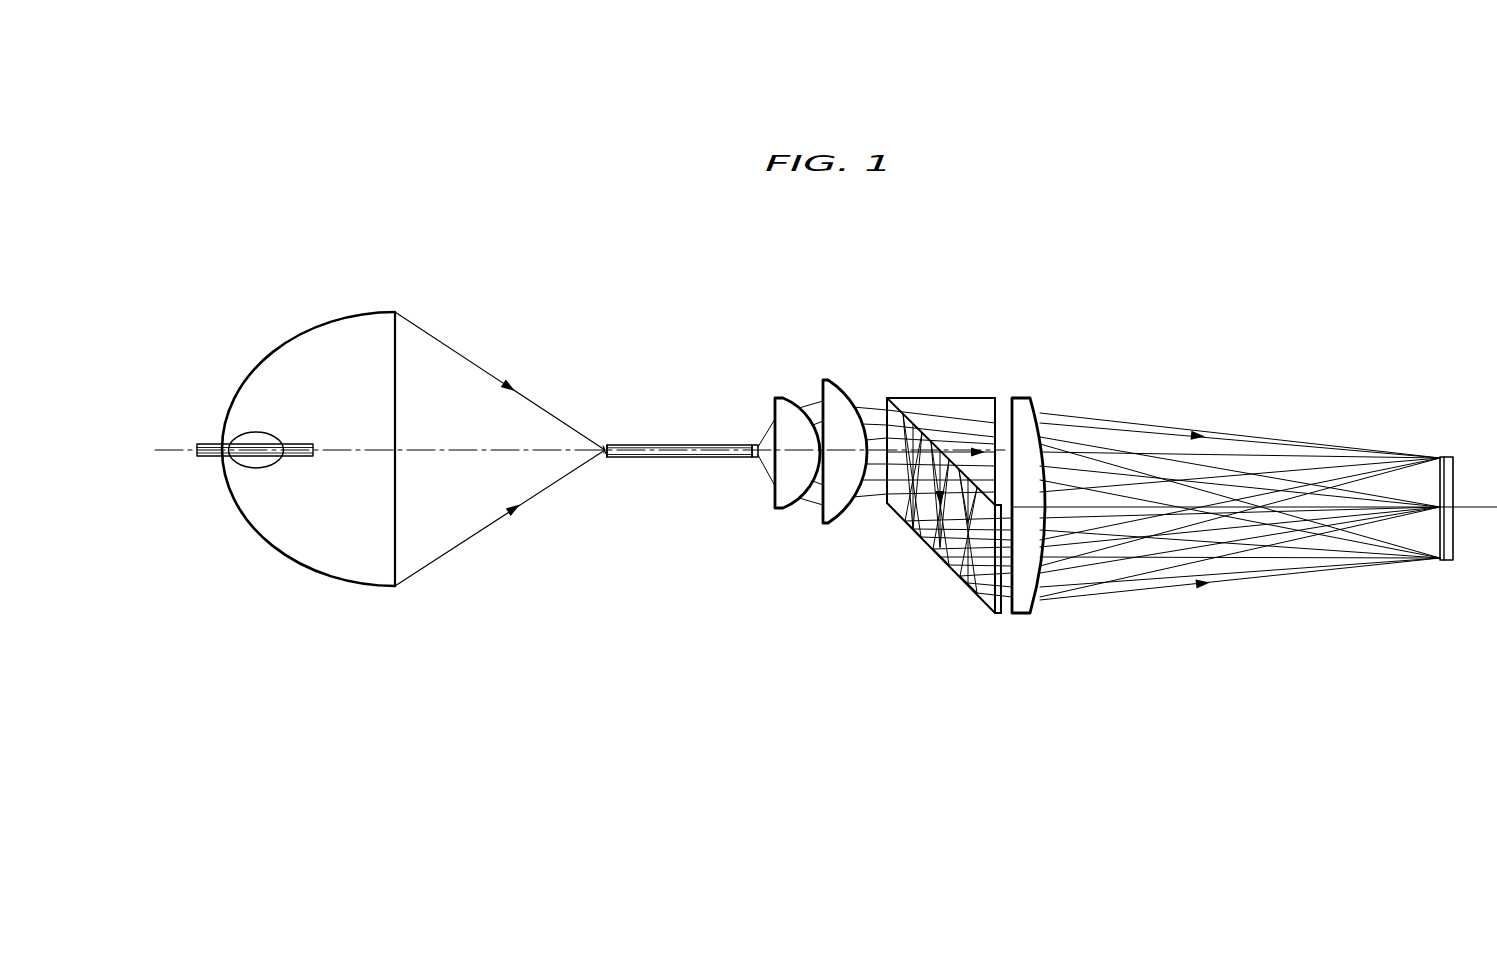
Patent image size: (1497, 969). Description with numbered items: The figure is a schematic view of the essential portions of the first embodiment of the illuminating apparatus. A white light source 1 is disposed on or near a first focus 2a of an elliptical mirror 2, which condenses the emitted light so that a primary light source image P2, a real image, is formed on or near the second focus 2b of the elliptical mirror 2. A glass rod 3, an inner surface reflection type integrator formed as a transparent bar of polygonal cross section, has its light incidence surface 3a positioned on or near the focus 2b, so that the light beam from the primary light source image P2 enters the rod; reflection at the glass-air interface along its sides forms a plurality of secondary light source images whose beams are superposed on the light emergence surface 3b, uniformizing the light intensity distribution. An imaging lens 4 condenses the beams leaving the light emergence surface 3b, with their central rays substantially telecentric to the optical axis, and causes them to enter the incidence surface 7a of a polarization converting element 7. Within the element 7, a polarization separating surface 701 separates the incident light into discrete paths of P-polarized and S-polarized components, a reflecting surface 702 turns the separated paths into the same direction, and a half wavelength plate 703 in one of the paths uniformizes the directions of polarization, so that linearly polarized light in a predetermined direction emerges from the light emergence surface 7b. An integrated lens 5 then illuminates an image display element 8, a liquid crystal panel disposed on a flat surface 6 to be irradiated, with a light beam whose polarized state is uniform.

The white light source 1 is at (245, 472).
The elliptical mirror 2 is at (356, 312).
The first focus 2a is at (258, 438).
The second focus 2b is at (591, 394).
The primary light source image P2 is at (604, 444).
The glass rod 3 is at (672, 443).
The light incidence surface 3a is at (604, 458).
The light emergence surface 3b is at (756, 460).
The imaging lens 4 is at (862, 362).
The integrated lens 5 is at (1020, 396).
The flat surface to be irradiated 6 is at (1460, 442).
The polarization converting element 7 is at (941, 382).
The incidence surface of polarization converting element 7a is at (885, 505).
The light emergence surface of polarization converting element 7b is at (998, 396).
The image display element 8 is at (1443, 572).
The polarization separating surface 701 is at (943, 522).
The reflecting surface 702 is at (952, 570).
The half wavelength plate 703 is at (1003, 610).